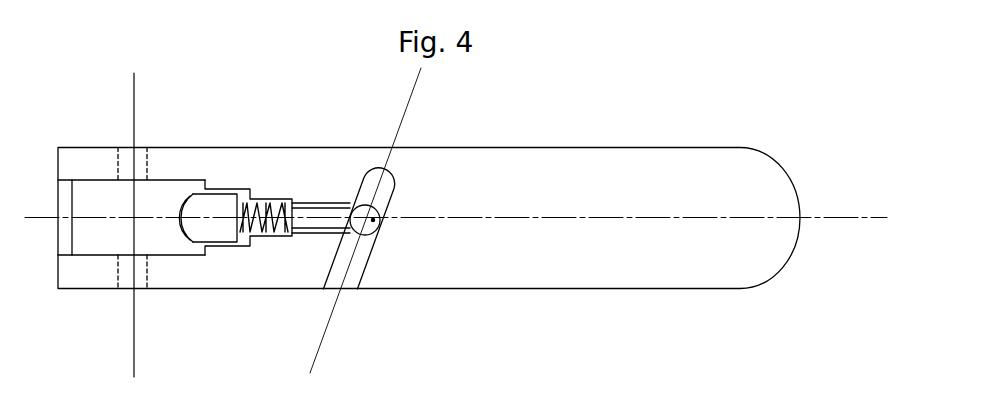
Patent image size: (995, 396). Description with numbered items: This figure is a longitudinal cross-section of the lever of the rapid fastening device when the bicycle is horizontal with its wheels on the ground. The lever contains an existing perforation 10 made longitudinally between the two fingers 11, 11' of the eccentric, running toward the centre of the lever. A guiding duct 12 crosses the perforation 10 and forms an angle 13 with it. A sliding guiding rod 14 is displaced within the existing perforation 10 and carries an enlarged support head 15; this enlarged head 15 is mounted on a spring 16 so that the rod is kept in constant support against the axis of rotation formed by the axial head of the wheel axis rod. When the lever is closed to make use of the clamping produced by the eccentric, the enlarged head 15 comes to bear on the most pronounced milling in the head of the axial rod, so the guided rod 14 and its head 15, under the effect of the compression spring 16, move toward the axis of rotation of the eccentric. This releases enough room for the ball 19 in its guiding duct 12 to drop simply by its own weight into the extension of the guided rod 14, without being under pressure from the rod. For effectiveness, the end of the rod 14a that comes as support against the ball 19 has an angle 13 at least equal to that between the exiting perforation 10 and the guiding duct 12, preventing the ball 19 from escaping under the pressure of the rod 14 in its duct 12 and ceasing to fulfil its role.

The existing perforation 10 is at (252, 237).
The fingers of the eccentric 11 is at (116, 136).
The fingers of the eccentric 11' is at (117, 301).
The guiding duct 12 is at (390, 193).
The angle 13 is at (330, 332).
The sliding guiding rod 14 is at (307, 220).
The end of the rod 14a is at (350, 217).
The enlarged head 15 is at (205, 210).
The spring 16 is at (239, 203).
The ball 19 is at (375, 221).